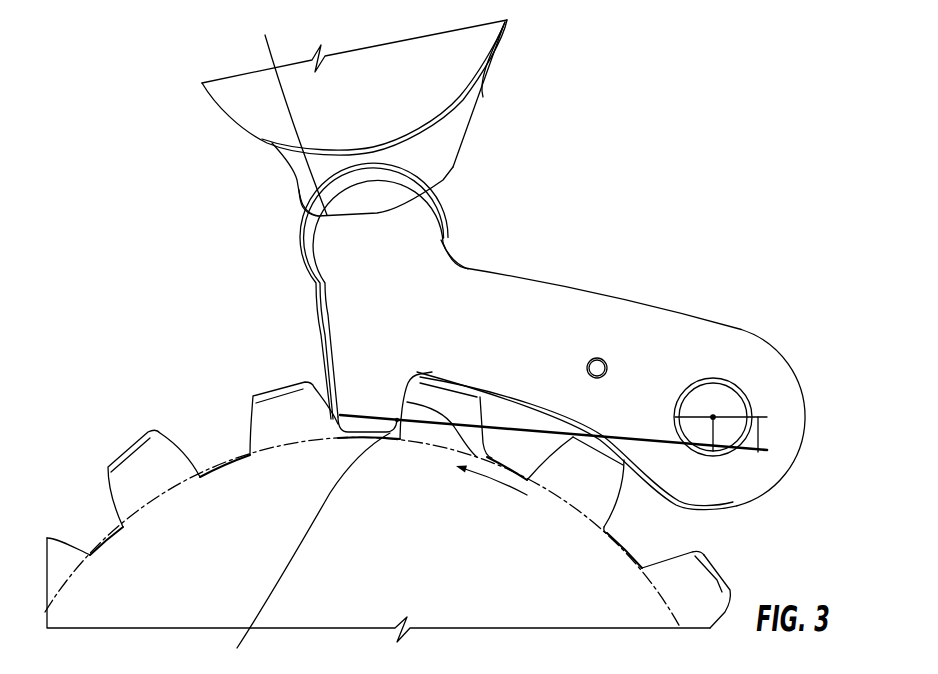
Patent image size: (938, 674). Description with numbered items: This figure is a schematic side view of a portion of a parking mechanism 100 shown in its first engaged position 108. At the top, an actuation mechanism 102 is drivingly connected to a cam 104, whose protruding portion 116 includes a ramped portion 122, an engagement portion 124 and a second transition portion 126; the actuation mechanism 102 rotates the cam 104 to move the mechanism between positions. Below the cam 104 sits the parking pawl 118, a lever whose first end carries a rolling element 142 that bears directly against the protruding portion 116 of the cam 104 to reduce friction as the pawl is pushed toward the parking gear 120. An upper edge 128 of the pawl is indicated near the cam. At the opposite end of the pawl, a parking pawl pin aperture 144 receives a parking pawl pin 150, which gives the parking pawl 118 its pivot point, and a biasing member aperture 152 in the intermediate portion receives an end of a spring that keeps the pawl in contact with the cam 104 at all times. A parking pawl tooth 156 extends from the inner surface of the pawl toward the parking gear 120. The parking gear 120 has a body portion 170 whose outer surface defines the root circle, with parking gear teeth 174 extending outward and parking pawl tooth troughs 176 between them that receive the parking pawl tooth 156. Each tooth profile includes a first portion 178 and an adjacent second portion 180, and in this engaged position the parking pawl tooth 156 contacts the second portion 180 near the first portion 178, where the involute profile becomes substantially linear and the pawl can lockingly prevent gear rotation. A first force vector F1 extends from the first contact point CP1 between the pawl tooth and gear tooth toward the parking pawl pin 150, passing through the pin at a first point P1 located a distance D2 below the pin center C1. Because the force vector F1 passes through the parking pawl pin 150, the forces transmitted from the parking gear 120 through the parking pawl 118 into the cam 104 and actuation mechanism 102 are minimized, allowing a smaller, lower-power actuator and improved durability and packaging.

The parking mechanism 100 is at (702, 179).
The actuation mechanism 102 is at (354, 87).
The cam 104 is at (410, 121).
The first engaged position 108 is at (703, 219).
The protruding portion 116 is at (259, 199).
The parking pawl 118 is at (559, 344).
The parking gear 120 is at (377, 507).
The ramped portion 122 is at (510, 59).
The engagement portion 124 is at (289, 110).
The second transition portion 126 is at (260, 179).
The pawl upper edge 128 is at (498, 247).
The rolling element 142 is at (345, 291).
The parking pawl pin aperture 144 is at (737, 379).
The parking pawl pin 150 is at (733, 356).
The biasing member aperture 152 is at (647, 320).
The parking pawl tooth 156 is at (326, 378).
The body portion 170 is at (684, 546).
The parking gear tooth 174 is at (744, 589).
The parking pawl tooth trough 176 is at (634, 523).
The first portion 178 is at (293, 550).
The second portion 180 is at (553, 440).
The center C1 is at (696, 407).
The first contact point CP1 is at (323, 386).
The distance D2 is at (778, 424).
The first force vector F1 is at (505, 427).
The first point P1 is at (734, 457).